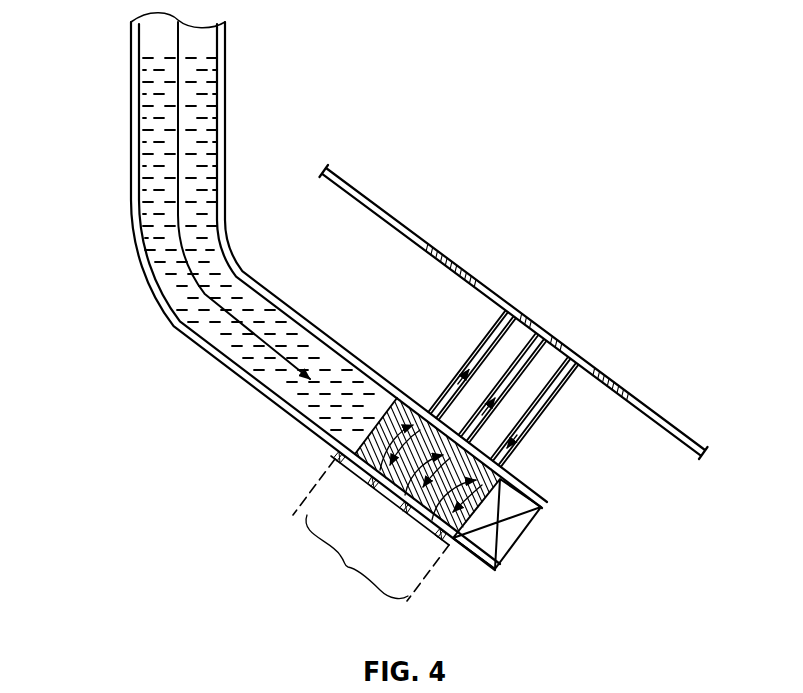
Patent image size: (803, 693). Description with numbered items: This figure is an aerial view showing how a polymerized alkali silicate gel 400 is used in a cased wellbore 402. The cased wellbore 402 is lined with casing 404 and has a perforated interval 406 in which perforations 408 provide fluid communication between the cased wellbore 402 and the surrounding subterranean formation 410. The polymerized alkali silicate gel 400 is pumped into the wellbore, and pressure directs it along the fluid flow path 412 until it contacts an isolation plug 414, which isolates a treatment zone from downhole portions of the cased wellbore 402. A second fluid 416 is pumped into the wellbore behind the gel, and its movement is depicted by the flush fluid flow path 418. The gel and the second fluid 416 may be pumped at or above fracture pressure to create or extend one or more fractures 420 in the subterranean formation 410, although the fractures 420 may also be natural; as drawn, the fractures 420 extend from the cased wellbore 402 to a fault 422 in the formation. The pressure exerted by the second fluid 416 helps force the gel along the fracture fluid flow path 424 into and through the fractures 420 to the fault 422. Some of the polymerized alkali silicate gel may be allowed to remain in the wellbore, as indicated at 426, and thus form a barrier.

The polymerized alkali silicate gel 400 is at (378, 496).
The cased wellbore 402 is at (128, 120).
The casing 404 is at (220, 76).
The perforated interval 406 is at (347, 568).
The perforations 408 is at (448, 548).
The subterranean formation 410 is at (424, 364).
The fluid flow path 412 is at (393, 490).
The isolation plug 414 is at (548, 532).
The second fluid 416 is at (166, 265).
The flush fluid flow path 418 is at (254, 325).
The fractures 420 is at (564, 384).
The fault 422 is at (404, 212).
The fracture fluid flow path 424 is at (466, 355).
The polymerized alkali silicate gel remaining in wellbore 426 is at (485, 284).